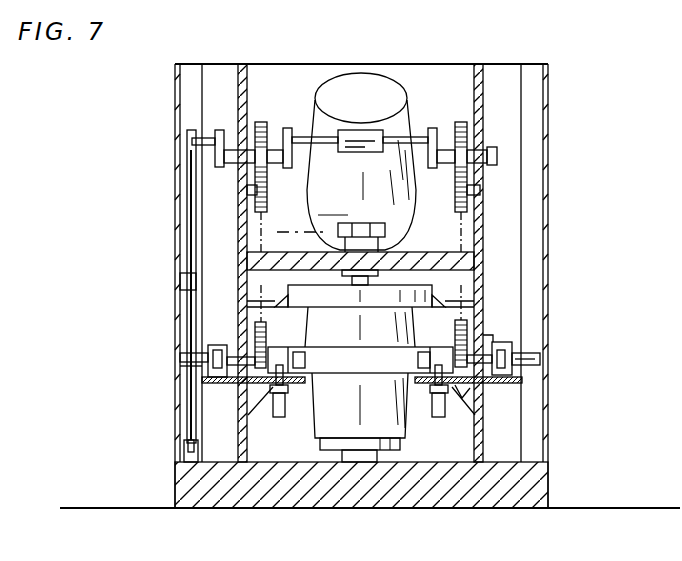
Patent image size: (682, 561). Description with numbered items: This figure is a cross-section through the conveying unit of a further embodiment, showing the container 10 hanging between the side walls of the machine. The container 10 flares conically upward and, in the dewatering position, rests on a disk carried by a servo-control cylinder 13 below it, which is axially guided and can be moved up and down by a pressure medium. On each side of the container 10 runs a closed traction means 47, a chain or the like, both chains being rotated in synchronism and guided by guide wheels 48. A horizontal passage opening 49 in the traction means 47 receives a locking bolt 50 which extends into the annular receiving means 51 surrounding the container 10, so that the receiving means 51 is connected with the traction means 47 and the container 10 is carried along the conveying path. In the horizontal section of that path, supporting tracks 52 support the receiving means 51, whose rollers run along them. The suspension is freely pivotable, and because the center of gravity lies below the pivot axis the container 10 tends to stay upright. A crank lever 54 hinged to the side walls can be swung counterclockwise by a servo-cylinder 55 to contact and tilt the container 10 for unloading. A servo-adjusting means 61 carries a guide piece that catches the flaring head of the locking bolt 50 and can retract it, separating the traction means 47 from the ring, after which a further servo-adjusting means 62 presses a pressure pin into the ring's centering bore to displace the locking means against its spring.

The container 10 is at (357, 95).
The servo-control cylinder 13 is at (351, 453).
The traction means 47 is at (462, 121).
The guide wheels 48 is at (470, 327).
The horizontal passage opening 49 is at (225, 370).
The locking bolt 50 is at (236, 356).
The annular receiving means 51 is at (378, 375).
The supporting tracks 52 is at (468, 396).
The crank lever 54 is at (300, 132).
The servo-cylinder 55 is at (190, 285).
The servo-adjusting means 61 is at (182, 359).
The further servo-adjusting means 62 is at (279, 420).